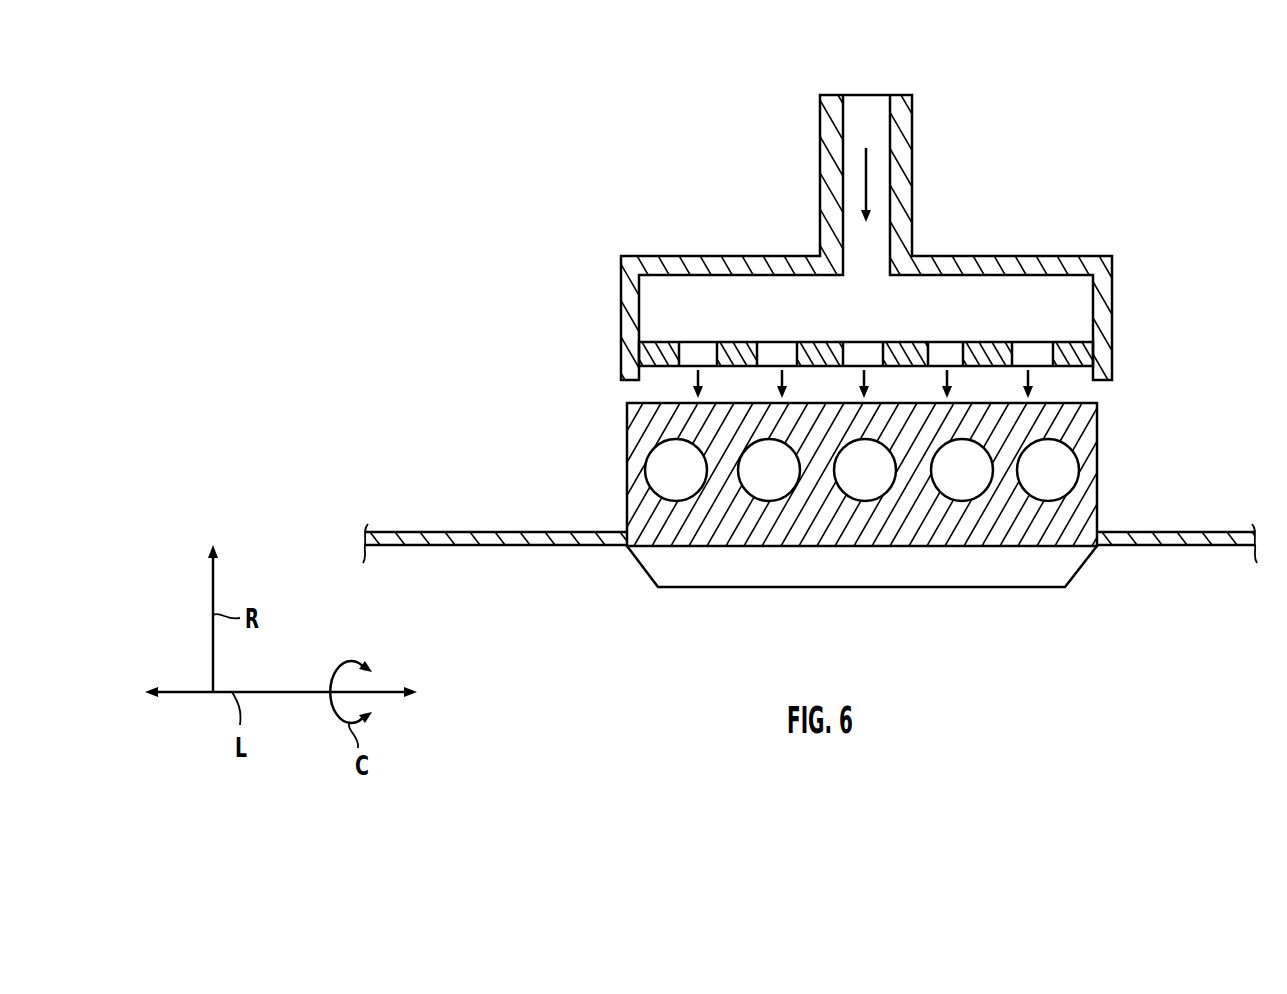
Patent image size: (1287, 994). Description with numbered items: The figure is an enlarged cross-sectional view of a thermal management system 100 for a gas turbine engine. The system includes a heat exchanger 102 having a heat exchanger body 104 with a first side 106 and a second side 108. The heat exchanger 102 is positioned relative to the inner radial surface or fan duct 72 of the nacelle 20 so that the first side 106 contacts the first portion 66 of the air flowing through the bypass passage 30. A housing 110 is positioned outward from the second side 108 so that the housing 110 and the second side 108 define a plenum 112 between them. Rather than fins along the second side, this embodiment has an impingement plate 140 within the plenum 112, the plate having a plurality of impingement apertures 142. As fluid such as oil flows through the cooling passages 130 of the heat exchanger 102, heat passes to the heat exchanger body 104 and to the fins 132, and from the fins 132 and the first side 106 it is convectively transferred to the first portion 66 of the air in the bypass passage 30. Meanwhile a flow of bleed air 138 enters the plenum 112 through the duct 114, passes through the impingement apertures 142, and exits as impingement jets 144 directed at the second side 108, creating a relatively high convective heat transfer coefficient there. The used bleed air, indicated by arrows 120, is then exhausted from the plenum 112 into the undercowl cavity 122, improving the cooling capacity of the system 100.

The thermal management system 100 is at (533, 135).
The heat exchanger 102 is at (580, 515).
The heat exchanger body 104 is at (1097, 512).
The first side of the heat exchanger body 106 is at (987, 546).
The second side of the heat exchanger body 108 is at (1067, 403).
The housing 110 is at (1068, 256).
The plenum 112 is at (1019, 311).
The duct 114 is at (820, 177).
The used bleed air 120 is at (620, 393).
The undercowl cavity 122 is at (590, 469).
The cooling passages 130 is at (659, 484).
The fins 132 is at (723, 588).
The bleed air 138 is at (867, 170).
The impingement plate 140 is at (912, 342).
The impingement apertures 142 is at (693, 330).
The impingement jets 144 is at (696, 385).
The nacelle 20 is at (505, 560).
The bypass passage 30 is at (872, 636).
The first portion of the air 66 is at (563, 608).
The inner radial surface or fan duct 72 is at (427, 546).